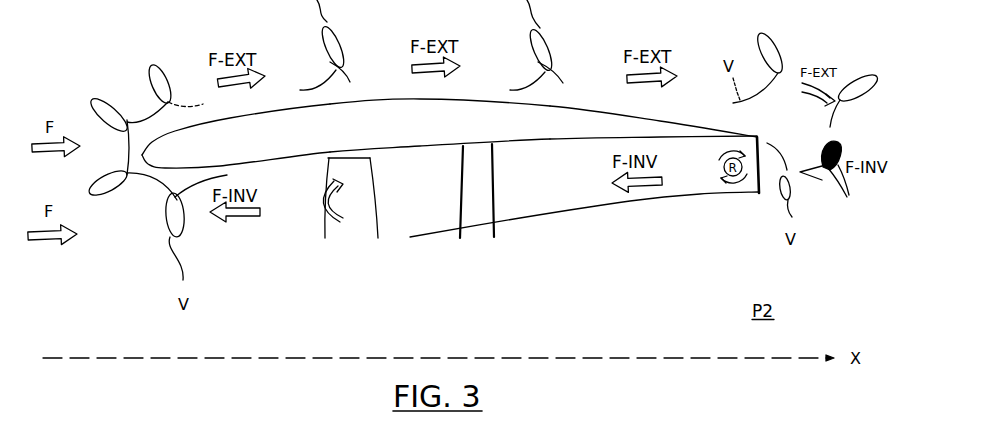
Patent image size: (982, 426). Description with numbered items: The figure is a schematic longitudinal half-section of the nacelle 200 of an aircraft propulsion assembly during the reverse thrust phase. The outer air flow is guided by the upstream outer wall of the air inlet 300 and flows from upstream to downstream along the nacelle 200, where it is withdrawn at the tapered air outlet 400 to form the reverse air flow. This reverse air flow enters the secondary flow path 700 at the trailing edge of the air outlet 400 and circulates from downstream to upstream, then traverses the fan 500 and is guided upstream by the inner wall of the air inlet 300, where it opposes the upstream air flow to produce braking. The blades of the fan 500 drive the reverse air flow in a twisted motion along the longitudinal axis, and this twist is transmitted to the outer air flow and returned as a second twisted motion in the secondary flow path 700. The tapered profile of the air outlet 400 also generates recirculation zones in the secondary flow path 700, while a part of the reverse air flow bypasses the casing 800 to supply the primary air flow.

The nacelle 200 is at (407, 144).
The air inlet 300 is at (192, 166).
The air outlet 400 is at (642, 140).
The fan 500 is at (350, 238).
The secondary flow path 700 is at (422, 218).
The casing 800 is at (523, 238).